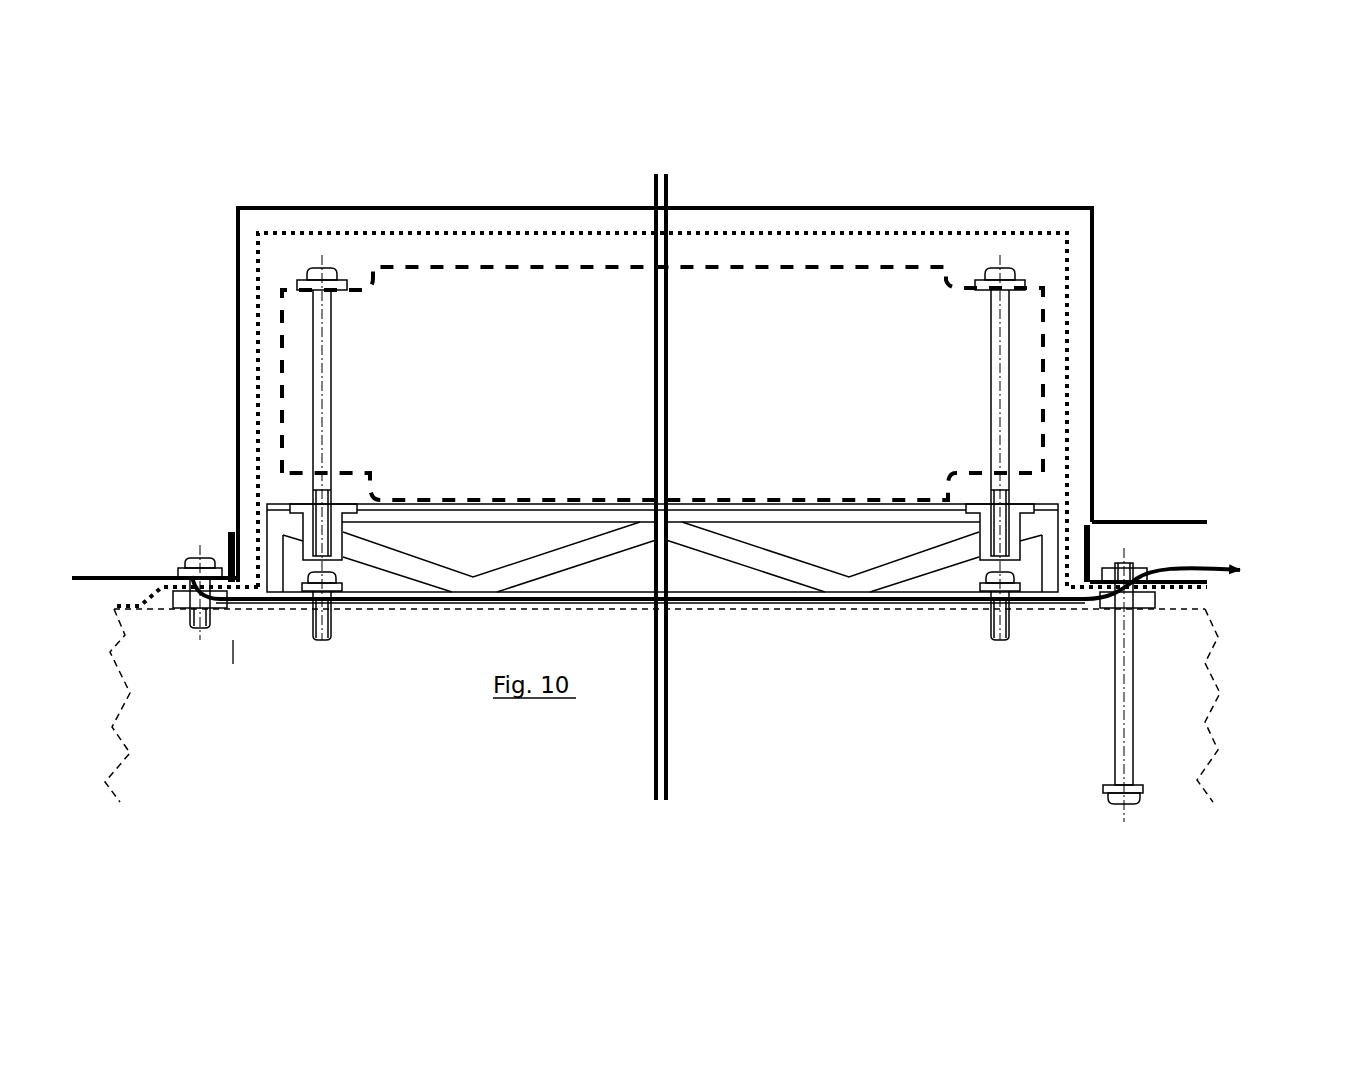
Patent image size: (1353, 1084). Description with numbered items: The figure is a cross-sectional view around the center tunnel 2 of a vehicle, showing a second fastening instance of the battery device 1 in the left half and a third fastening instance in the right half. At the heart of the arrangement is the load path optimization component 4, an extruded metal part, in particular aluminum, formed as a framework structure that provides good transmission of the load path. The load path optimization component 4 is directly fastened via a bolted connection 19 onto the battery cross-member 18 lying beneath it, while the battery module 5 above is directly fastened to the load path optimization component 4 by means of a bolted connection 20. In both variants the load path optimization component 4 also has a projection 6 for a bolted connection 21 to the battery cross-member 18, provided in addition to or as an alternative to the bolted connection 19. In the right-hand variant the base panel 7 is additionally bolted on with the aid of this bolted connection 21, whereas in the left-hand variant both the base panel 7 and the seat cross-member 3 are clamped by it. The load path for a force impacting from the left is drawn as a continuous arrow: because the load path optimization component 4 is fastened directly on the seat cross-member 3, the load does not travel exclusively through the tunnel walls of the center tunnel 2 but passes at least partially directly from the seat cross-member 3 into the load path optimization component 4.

The insulation layer 1 is at (1068, 386).
The center tunnel 2 is at (1088, 283).
The seat cross-member 3 is at (96, 576).
The load path optimization component 4 is at (573, 512).
The battery module 5 is at (452, 270).
The projection 6 is at (183, 600).
The base panel 7 is at (118, 590).
The battery cross-member 18 is at (1218, 742).
The bolted connection 19 is at (990, 640).
The bolted connection 20 is at (334, 346).
The bolted connection 21 is at (186, 548).